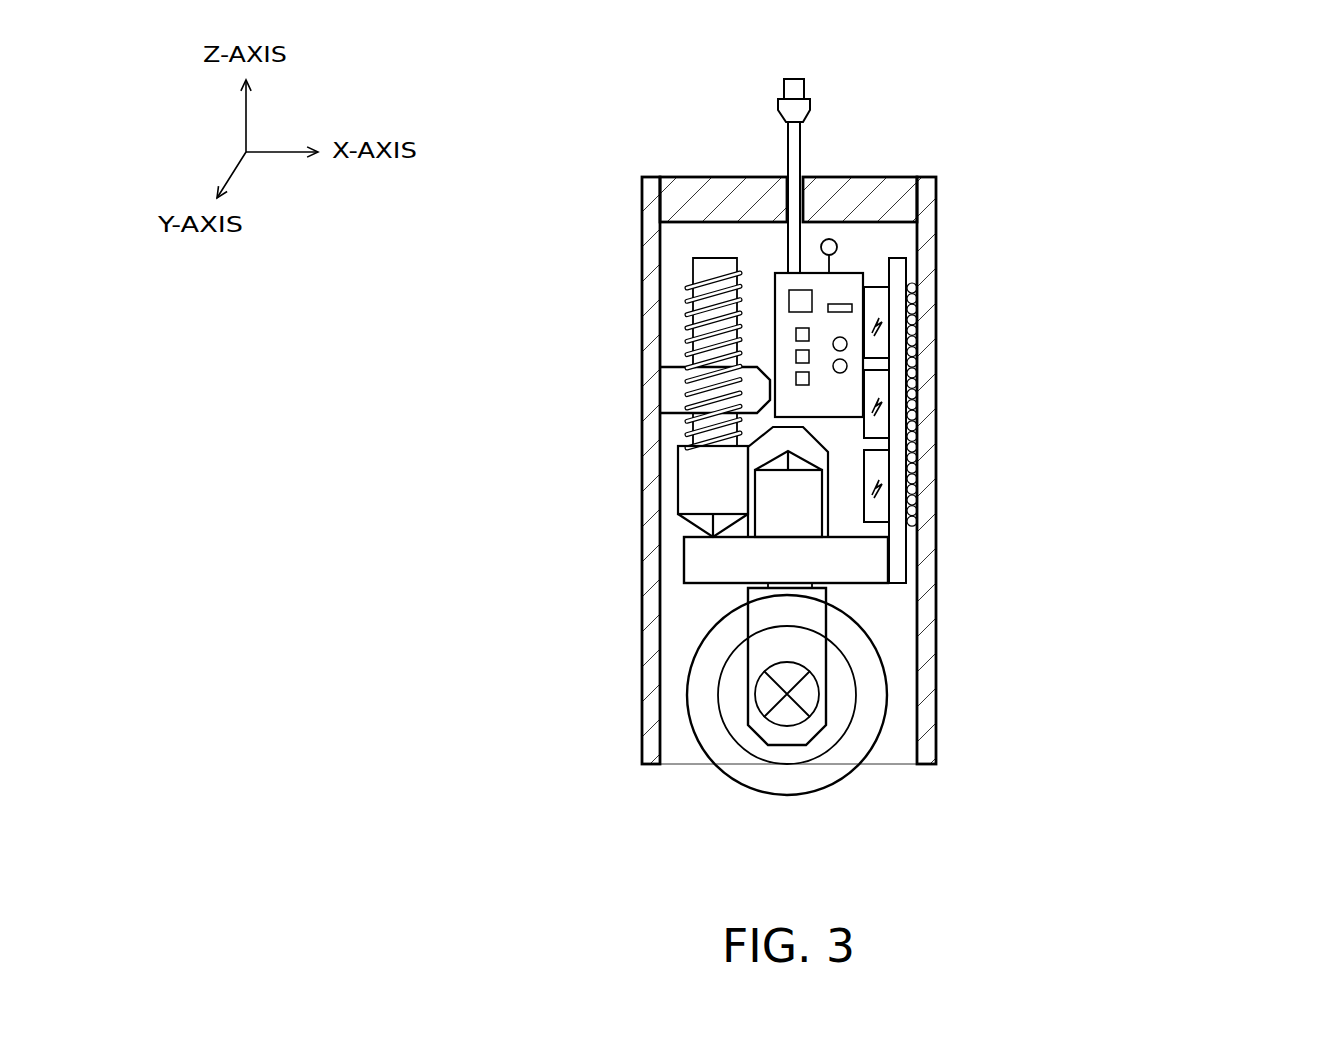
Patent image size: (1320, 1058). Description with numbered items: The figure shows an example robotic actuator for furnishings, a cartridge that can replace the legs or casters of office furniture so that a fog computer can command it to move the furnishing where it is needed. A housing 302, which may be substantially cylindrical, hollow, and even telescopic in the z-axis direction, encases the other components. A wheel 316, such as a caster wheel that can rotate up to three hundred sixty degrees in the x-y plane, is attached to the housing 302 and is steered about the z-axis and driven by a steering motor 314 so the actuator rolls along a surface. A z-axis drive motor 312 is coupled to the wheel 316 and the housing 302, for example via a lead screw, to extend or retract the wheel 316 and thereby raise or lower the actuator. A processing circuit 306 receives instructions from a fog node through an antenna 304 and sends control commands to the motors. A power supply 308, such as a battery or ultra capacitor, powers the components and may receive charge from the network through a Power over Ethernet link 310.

The housing 302 is at (937, 571).
The antenna 304 is at (843, 247).
The processing circuit 306 is at (843, 325).
The power supply 308 is at (885, 398).
The Power over Ethernet (PoE) link 310 is at (812, 88).
The z-axis drive motor 312 is at (692, 465).
The steering motor 314 is at (805, 500).
The wheel 316 is at (717, 659).